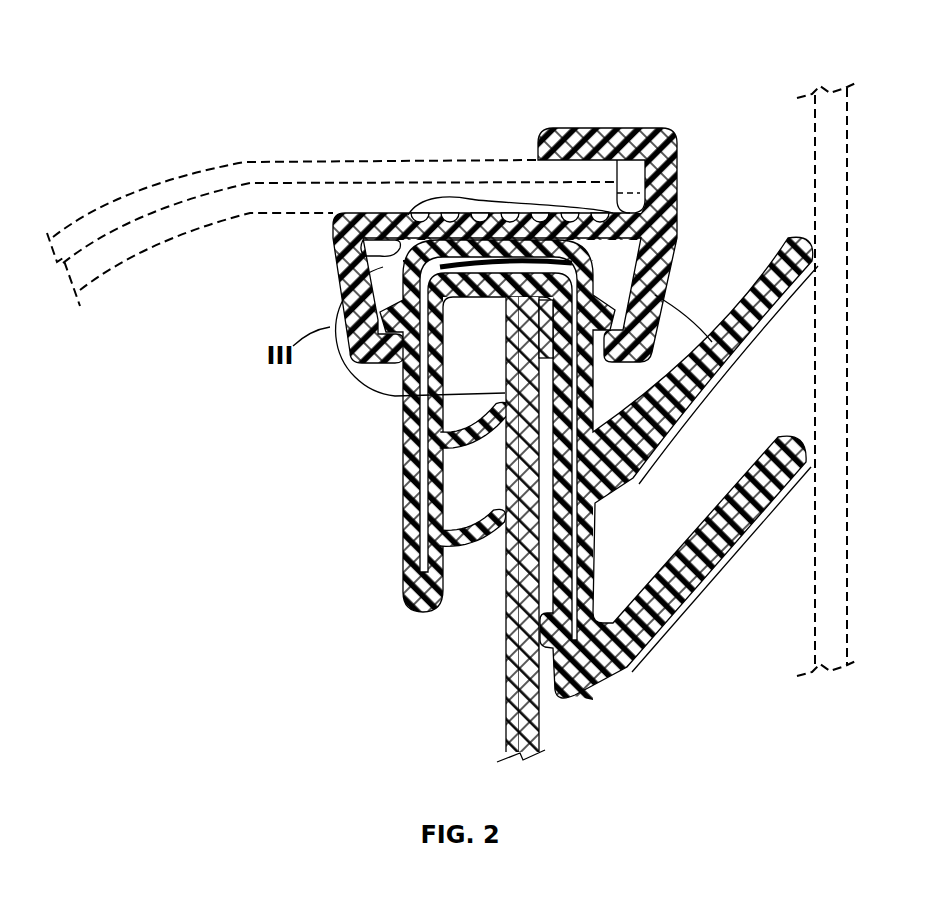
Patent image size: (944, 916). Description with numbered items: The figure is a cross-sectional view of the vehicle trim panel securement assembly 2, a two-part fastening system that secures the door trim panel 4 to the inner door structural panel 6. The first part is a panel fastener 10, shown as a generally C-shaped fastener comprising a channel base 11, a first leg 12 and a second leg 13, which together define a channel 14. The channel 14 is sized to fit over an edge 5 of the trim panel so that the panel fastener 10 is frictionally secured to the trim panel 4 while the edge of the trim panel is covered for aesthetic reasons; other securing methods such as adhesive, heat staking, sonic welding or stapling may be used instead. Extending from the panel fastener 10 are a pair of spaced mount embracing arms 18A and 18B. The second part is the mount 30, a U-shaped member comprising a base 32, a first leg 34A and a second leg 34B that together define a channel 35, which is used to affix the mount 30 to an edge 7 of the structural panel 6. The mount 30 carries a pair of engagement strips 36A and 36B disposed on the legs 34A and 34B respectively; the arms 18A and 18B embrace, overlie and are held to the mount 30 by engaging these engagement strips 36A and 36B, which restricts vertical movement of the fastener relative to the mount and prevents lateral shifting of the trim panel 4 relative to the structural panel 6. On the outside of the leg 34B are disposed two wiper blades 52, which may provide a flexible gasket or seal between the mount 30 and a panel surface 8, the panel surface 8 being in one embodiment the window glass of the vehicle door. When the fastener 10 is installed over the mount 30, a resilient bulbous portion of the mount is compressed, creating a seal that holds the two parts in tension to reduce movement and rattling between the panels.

The vehicle trim panel securement assembly 2 is at (708, 80).
The door trim panel 4 is at (153, 180).
The edge of the trim panel 5 is at (665, 243).
The inner door structural panel 6 is at (540, 717).
The edge of the structural panel 7 is at (505, 681).
The panel surface 8 is at (847, 138).
The panel fastener 10 is at (497, 246).
The channel base 11 is at (678, 183).
The first leg 12 is at (562, 128).
The second leg 13 is at (335, 247).
The channel 14 is at (621, 162).
The first mount embracing arm 18A is at (315, 329).
The second mount embracing arm 18B is at (680, 324).
The mount 30 is at (570, 468).
The base 32 is at (490, 298).
The first leg 34A is at (407, 458).
The second leg 34B is at (594, 520).
The channel 35 is at (467, 518).
The first engagement strip 36A is at (390, 366).
The second engagement strip 36B is at (614, 358).
The wiper blades 52 is at (703, 516).